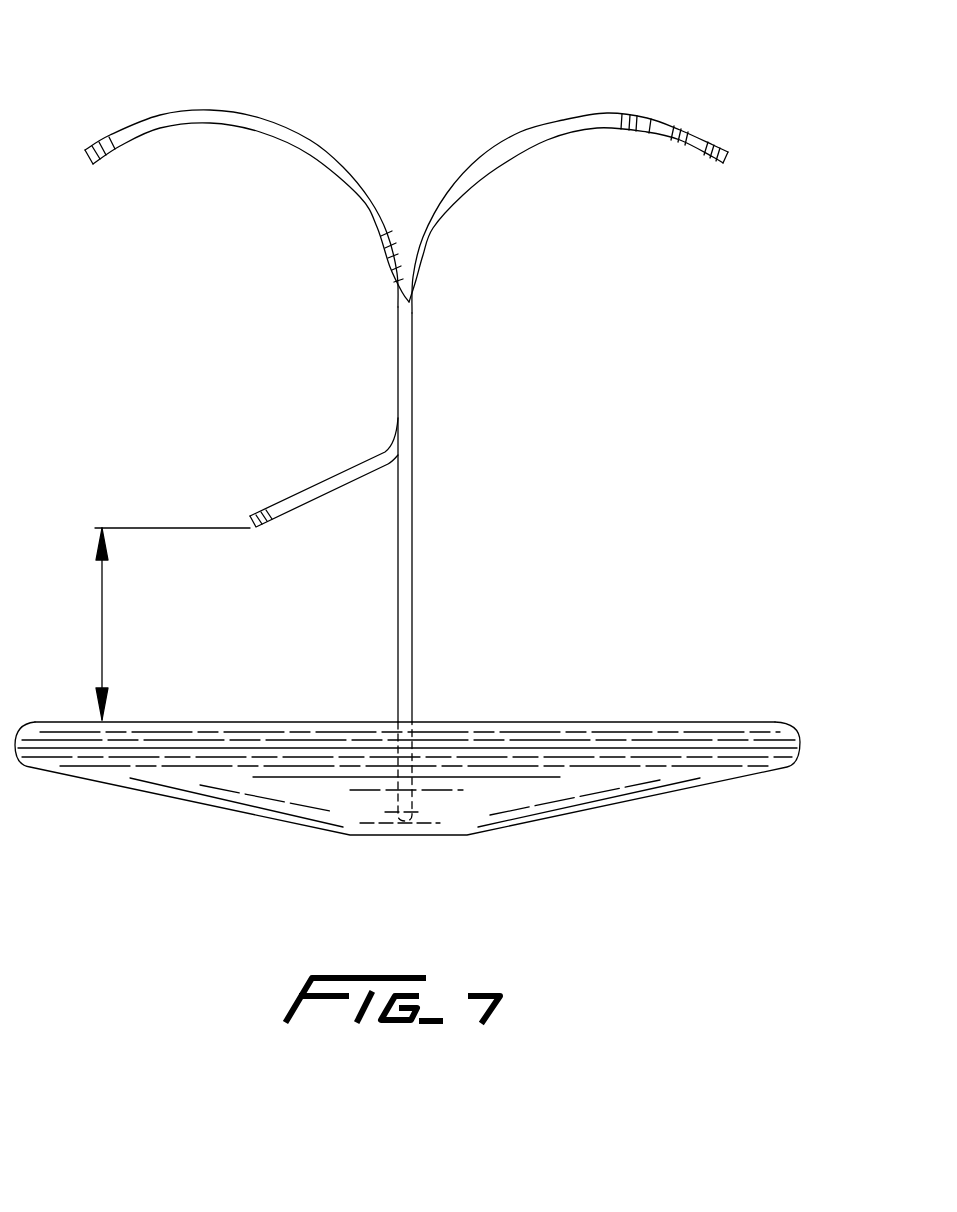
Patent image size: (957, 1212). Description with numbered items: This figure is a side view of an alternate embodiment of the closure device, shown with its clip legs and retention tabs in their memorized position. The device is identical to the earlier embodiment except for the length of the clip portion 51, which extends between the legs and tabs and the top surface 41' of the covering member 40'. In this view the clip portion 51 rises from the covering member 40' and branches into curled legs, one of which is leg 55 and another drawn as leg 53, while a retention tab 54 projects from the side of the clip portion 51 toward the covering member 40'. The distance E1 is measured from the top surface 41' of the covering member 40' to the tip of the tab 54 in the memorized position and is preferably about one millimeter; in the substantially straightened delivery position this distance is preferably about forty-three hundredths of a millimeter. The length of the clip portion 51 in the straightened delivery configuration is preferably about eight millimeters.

The clip portion 51 is at (769, 721).
The left arcuate arm 53 is at (245, 118).
The leg 55 is at (563, 118).
The tab 54 is at (333, 478).
The top surface 41' is at (405, 678).
The covering member 40' is at (407, 747).
The distance E1 is at (100, 632).